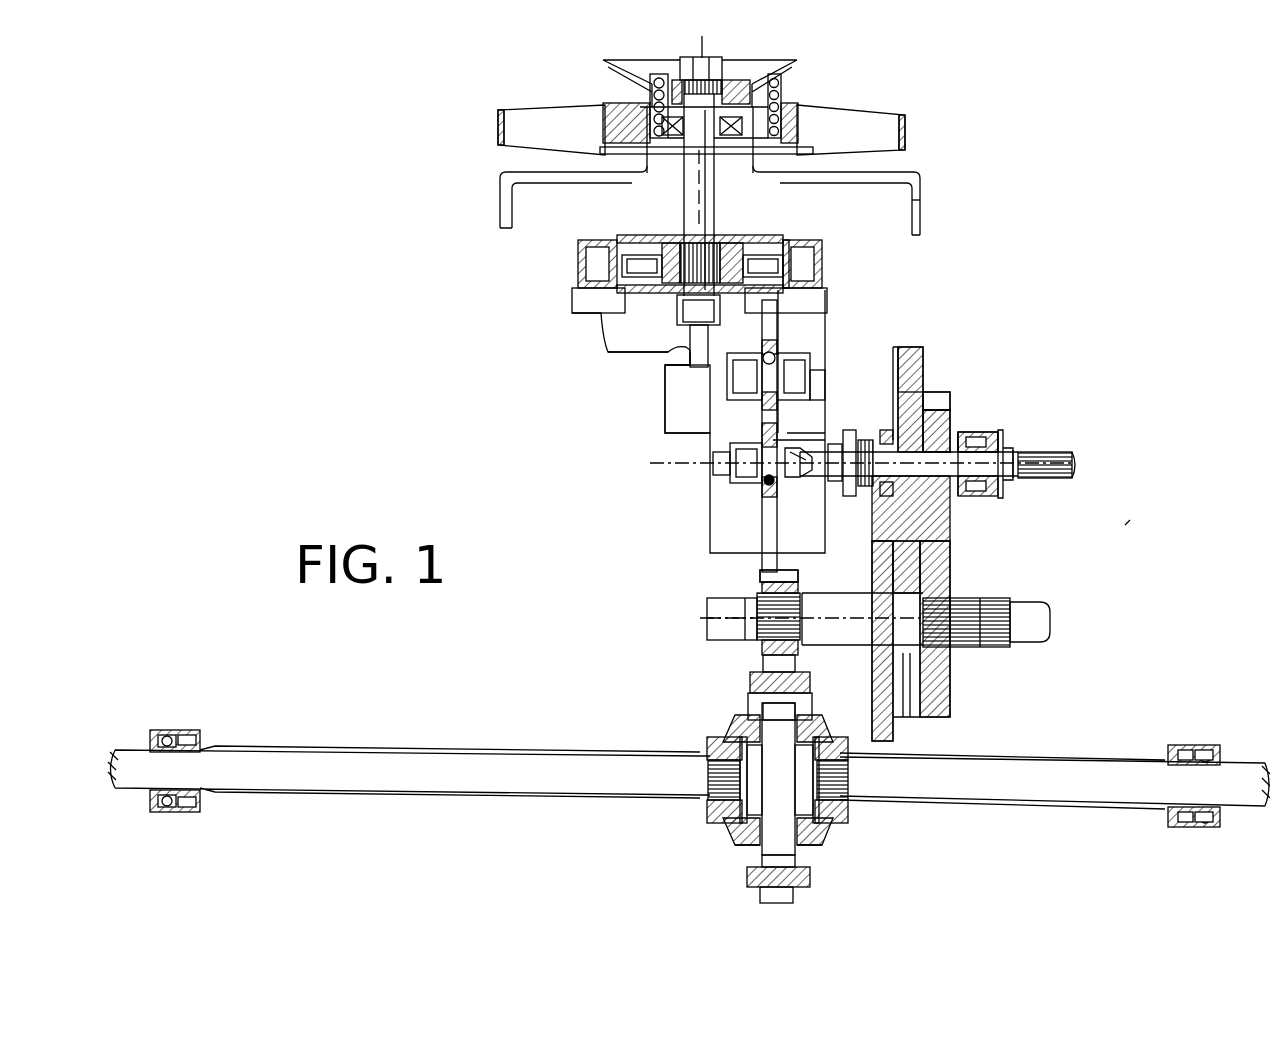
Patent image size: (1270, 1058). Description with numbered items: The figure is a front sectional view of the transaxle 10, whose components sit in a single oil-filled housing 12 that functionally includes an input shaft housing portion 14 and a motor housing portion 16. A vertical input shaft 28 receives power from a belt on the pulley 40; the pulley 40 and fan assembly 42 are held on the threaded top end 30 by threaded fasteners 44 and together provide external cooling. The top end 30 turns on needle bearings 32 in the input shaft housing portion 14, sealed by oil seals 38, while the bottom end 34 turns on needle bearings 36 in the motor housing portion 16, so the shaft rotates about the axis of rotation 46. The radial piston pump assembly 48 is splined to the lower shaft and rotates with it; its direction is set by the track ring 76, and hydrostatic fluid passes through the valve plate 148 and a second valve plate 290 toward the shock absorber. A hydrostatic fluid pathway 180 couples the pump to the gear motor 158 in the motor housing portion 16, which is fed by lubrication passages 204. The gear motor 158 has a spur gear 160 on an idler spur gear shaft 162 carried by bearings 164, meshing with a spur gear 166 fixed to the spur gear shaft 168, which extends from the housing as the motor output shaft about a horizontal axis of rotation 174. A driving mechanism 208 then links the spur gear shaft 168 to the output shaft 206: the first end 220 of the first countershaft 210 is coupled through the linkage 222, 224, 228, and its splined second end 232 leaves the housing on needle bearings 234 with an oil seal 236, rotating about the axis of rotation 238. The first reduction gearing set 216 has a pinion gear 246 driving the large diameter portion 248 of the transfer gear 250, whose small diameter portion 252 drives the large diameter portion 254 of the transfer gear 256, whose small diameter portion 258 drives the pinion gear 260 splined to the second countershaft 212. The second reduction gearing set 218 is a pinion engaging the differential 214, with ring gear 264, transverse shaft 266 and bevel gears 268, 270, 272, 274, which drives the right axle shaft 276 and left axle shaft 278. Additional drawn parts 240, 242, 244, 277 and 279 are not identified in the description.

The transaxle 10 is at (1180, 207).
The housing 12 is at (925, 222).
The input shaft housing portion 14 is at (653, 180).
The motor housing portion 16 is at (623, 337).
The input shaft 28 is at (712, 218).
The top end 30 is at (708, 58).
The needle bearings 32 is at (716, 150).
The bottom end 34 is at (675, 313).
The needle bearings 36 is at (720, 305).
The oil seals 38 is at (797, 106).
The pulley 40 is at (603, 63).
The fan assembly 42 is at (498, 110).
The threaded fasteners 44 is at (724, 68).
The axis of rotation 46 is at (770, 92).
The radial piston pump assembly 48 is at (803, 240).
The track ring 76 is at (587, 278).
The valve plate 148 is at (600, 315).
The gear motor 158 is at (737, 489).
The spur gear 160 is at (775, 338).
The spur gear shaft 162 is at (790, 372).
The bearings 164 is at (733, 404).
The spur gear 166 is at (790, 388).
The spur gear shaft 168 is at (735, 468).
The axis of rotation 174 is at (665, 458).
The hydrostatic fluid pathway 180 is at (683, 352).
The lubrication passages 204 is at (677, 377).
The output shaft 206 is at (597, 754).
The driving mechanism 208 is at (1134, 521).
The first countershaft 210 is at (1002, 457).
The second countershaft 212 is at (836, 637).
The differential 214 is at (743, 687).
The first reduction gearing set 216 is at (932, 350).
The second reduction gearing set 218 is at (760, 567).
The first end 220 is at (935, 478).
The linkage 222 is at (782, 478).
The linkage 224 is at (815, 487).
The linkage 228 is at (850, 500).
The second end 232 is at (1052, 455).
The needle bearings 234 is at (970, 498).
The oil seal 236 is at (1005, 484).
The axis of rotation 238 is at (975, 428).
The shaft end 240 is at (1028, 605).
The shaft stub 242 is at (720, 602).
The axis 244 is at (700, 618).
The pinion gear 246 is at (896, 345).
The large diameter portion 248 is at (877, 567).
The transfer gear 250 is at (868, 588).
The small diameter portion 252 is at (895, 722).
The large diameter portion 254 is at (930, 383).
The transfer gear 256 is at (940, 392).
The small diameter portion 258 is at (952, 430).
The pinion gear 260 is at (953, 563).
The ring gear 264 is at (757, 880).
The transverse shaft 266 is at (785, 838).
The bevel gear 268 is at (743, 847).
The bevel gear 270 is at (847, 815).
The bevel gear 272 is at (737, 717).
The bevel gear 274 is at (710, 750).
The right axle shaft 276 is at (978, 765).
The bearing 277 is at (190, 732).
The left axle shaft 278 is at (287, 765).
The bearing 279 is at (162, 742).
The second valve plate 290 is at (657, 237).